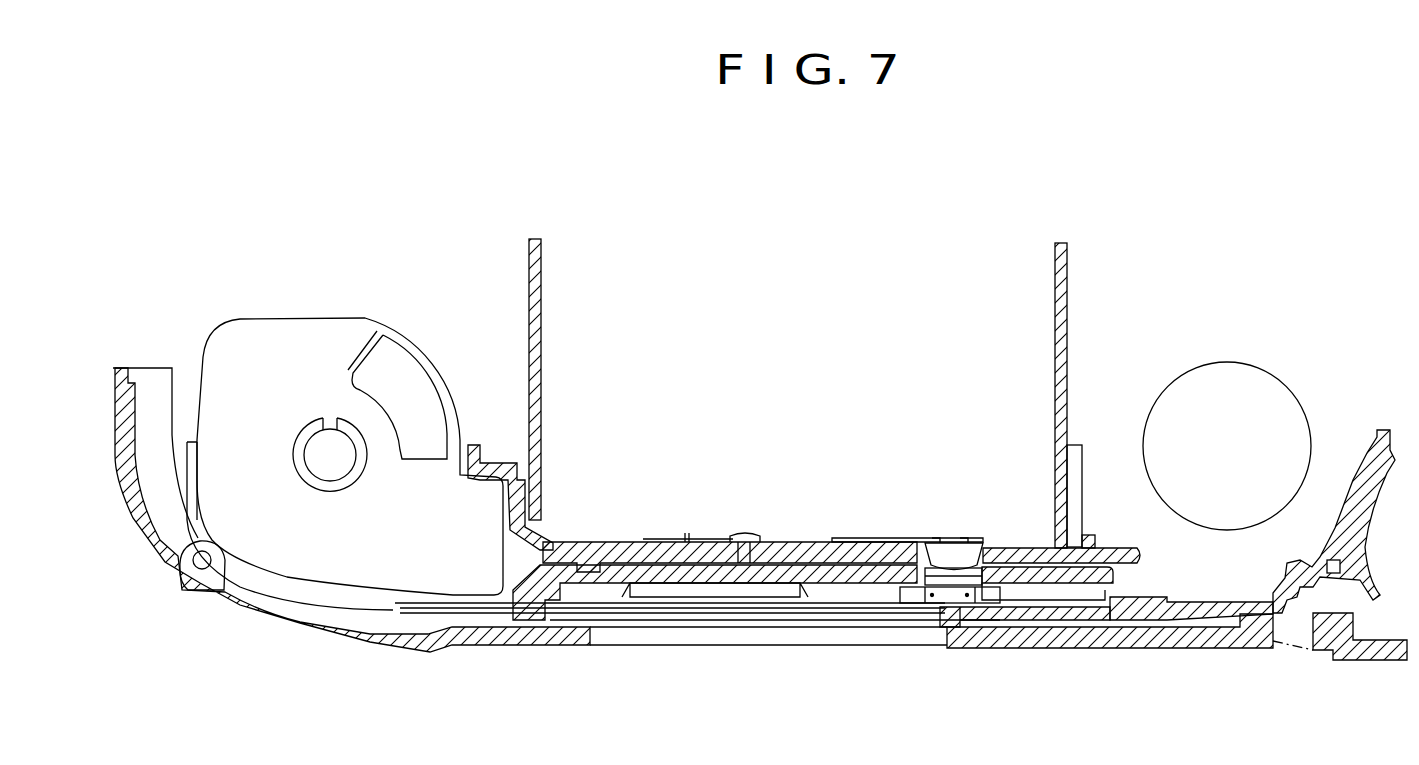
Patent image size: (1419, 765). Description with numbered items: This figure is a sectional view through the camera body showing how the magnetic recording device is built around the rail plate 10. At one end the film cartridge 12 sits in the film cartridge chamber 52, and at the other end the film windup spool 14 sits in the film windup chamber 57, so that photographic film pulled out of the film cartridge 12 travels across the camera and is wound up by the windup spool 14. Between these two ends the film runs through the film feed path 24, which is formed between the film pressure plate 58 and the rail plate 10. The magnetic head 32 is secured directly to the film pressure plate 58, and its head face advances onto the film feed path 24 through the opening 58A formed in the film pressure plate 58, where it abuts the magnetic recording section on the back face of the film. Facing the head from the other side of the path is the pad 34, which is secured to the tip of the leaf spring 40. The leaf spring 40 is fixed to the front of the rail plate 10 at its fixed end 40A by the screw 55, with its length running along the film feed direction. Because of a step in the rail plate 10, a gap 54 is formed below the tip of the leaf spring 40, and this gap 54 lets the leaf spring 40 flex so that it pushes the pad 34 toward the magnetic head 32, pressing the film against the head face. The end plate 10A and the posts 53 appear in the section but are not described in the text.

The rail plate 10 is at (637, 545).
The chassis end plate 10A is at (985, 550).
The film cartridge 12 is at (305, 328).
The film windup spool 14 is at (1250, 380).
The film feed path 24 is at (658, 567).
The magnetic head 32 is at (947, 592).
The pad 34 is at (947, 550).
The leaf spring 40 is at (872, 538).
The fixed end 40A is at (713, 538).
The film cartridge chamber 52 is at (231, 313).
The post 53 is at (528, 257).
The gap 54 is at (843, 545).
The screw 55 is at (740, 533).
The film windup chamber 57 is at (1313, 408).
The film pressure plate 58 is at (743, 570).
The opening 58A is at (963, 575).